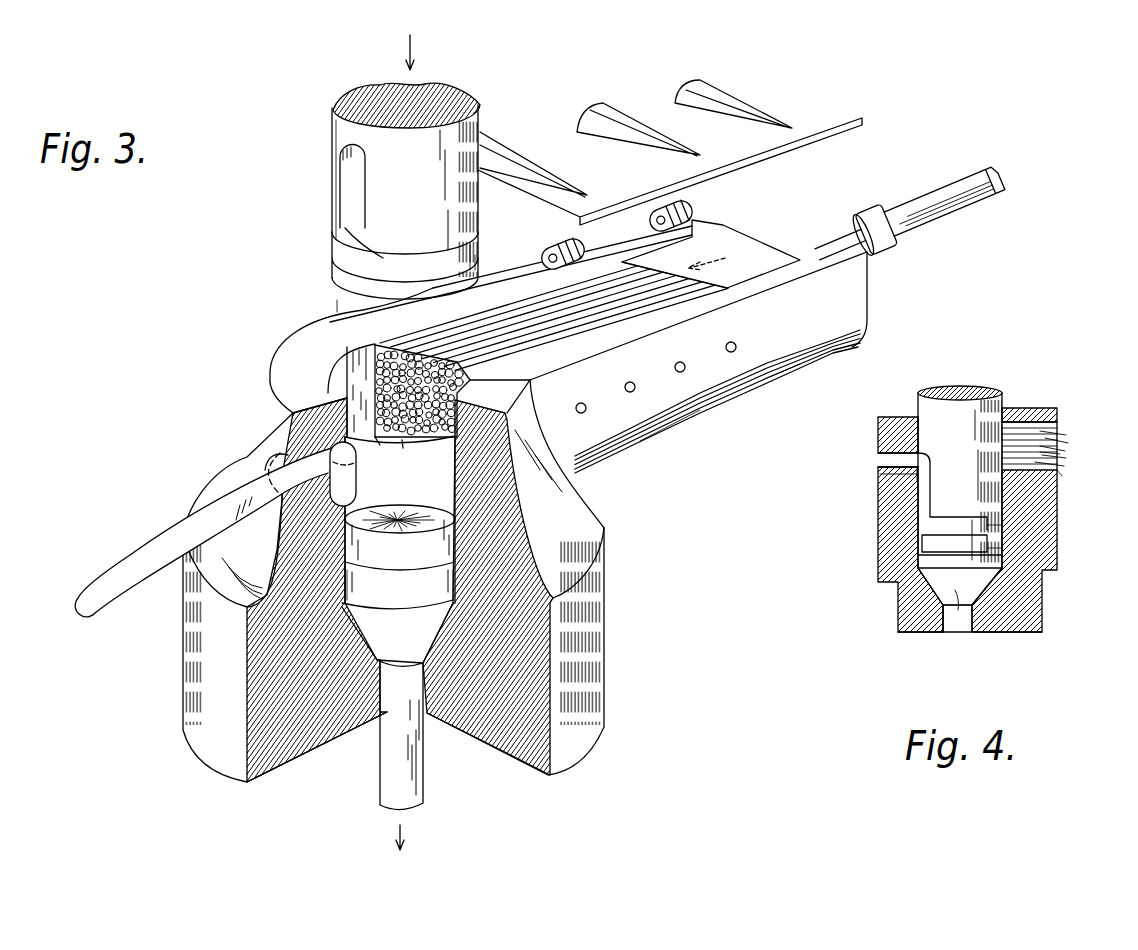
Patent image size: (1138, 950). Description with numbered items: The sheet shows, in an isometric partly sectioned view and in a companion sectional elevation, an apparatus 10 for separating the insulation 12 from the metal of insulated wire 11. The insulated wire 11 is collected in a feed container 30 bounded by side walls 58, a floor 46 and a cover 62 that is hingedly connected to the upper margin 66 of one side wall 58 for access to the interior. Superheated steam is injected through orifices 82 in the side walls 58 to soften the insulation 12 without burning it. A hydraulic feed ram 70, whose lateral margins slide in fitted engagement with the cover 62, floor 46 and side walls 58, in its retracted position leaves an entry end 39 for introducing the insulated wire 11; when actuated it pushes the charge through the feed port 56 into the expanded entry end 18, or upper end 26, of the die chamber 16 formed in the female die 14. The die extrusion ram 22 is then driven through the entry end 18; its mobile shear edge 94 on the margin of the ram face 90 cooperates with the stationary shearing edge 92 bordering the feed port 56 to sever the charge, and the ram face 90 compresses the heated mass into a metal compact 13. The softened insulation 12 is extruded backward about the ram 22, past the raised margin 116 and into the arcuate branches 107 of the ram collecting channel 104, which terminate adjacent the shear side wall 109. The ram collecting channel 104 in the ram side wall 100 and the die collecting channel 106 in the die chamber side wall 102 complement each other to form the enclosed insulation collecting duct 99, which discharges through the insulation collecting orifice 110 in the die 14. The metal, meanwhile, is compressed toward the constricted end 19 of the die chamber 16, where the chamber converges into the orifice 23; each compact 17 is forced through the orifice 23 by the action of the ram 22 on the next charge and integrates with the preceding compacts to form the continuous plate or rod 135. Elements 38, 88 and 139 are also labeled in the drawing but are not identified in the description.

In FIG. 3, the apparatus 10 is at (274, 334).
In FIG. 3, the insulated wire 11 is at (378, 387).
In FIG. 4, the insulated wire 11 is at (1050, 450).
In FIG. 3, the insulation 12 is at (130, 538).
In FIG. 4, the metal compact 13 is at (990, 580).
In FIG. 3, the female die 14 is at (606, 662).
In FIG. 3, the die chamber 16 is at (440, 524).
In FIG. 4, the die chamber 16 is at (1000, 518).
In FIG. 3, the compact 17 is at (412, 602).
In FIG. 4, the compact 17 is at (938, 606).
In FIG. 3, the entry end 18 is at (336, 372).
In FIG. 4, the entry end 18 is at (961, 510).
In FIG. 3, the constricted end 19 is at (379, 656).
In FIG. 4, the constricted end 19 is at (926, 590).
In FIG. 3, the die extrusion ram 22 is at (331, 152).
In FIG. 4, the die extrusion ram 22 is at (928, 437).
In FIG. 3, the orifice 23 is at (394, 718).
In FIG. 4, the orifice 23 is at (941, 633).
In FIG. 3, the upper end of die chamber 26 is at (361, 391).
In FIG. 3, the feed container 30 is at (658, 302).
In FIG. 4, the feed container 30 is at (1048, 430).
In FIG. 3, the die edge 38 is at (703, 292).
In FIG. 3, the entry end of container 39 is at (776, 246).
In FIG. 3, the floor 46 is at (437, 440).
In FIG. 3, the feed port 56 is at (403, 453).
In FIG. 4, the feed port 56 is at (1008, 422).
In FIG. 3, the side walls 58 is at (518, 292).
In FIG. 3, the cover 62 is at (556, 146).
In FIG. 4, the cover 62 is at (1045, 408).
In FIG. 3, the upper margin 66 is at (600, 254).
In FIG. 3, the hydraulic feed ram 70 is at (736, 262).
In FIG. 3, the orifices 82 is at (656, 354).
In FIG. 3, the trough face 88 is at (737, 378).
In FIG. 3, the ram face 90 is at (340, 296).
In FIG. 4, the ram face 90 is at (930, 560).
In FIG. 3, the stationary shearing edge 92 is at (373, 453).
In FIG. 4, the stationary shearing edge 92 is at (1046, 472).
In FIG. 3, the shear edge 94 is at (486, 262).
In FIG. 4, the insulation collecting duct 99 is at (928, 496).
In FIG. 3, the ram side wall 100 is at (332, 118).
In FIG. 4, the ram side wall 100 is at (918, 400).
In FIG. 3, the die chamber side wall 102 is at (342, 352).
In FIG. 4, the die chamber side wall 102 is at (917, 476).
In FIG. 3, the ram collecting channel 104 is at (355, 195).
In FIG. 3, the die collecting channel 106 is at (350, 470).
In FIG. 4, the die collecting channel 106 is at (880, 468).
In FIG. 3, the arcuate branches 107 is at (373, 257).
In FIG. 4, the arcuate branches 107 is at (975, 526).
In FIG. 3, the shear side wall 109 is at (478, 226).
In FIG. 4, the shear side wall 109 is at (995, 549).
In FIG. 3, the insulation collecting orifice 110 is at (268, 455).
In FIG. 4, the insulation collecting orifice 110 is at (890, 462).
In FIG. 3, the raised margin 116 is at (331, 267).
In FIG. 4, the raised margin 116 is at (922, 541).
In FIG. 3, the continuous plate or rod 135 is at (424, 752).
In FIG. 3, the chamber wall 139 is at (371, 635).
In FIG. 4, the chamber wall 139 is at (985, 596).